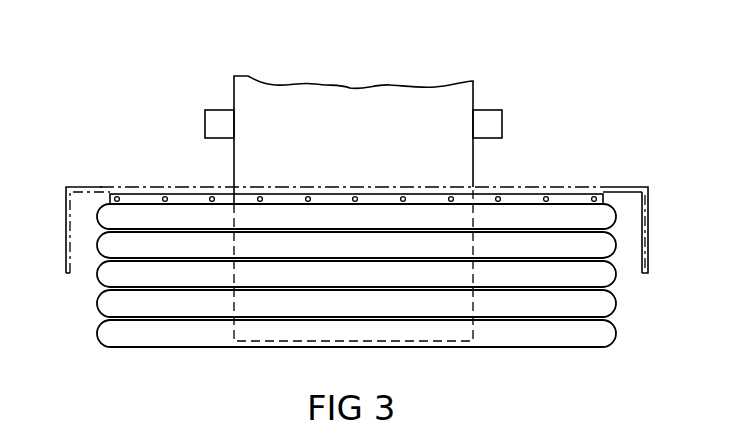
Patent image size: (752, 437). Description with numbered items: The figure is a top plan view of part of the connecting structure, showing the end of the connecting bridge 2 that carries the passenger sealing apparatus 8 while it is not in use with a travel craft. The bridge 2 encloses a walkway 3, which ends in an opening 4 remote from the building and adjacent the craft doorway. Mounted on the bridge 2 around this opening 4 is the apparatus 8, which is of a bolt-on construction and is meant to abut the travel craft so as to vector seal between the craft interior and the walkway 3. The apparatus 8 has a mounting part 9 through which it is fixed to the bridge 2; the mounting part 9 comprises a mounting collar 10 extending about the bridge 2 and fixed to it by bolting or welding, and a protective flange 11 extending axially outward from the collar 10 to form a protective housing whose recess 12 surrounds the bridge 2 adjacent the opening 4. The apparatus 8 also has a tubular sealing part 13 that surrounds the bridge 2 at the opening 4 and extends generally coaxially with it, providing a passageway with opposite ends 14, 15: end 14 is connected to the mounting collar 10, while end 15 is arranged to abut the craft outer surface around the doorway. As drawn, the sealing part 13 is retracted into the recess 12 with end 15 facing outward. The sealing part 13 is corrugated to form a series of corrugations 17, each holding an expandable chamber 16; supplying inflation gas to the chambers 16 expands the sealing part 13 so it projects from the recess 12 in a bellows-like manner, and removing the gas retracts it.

The connecting bridge 2 is at (234, 93).
The enclosed walkway 3 is at (345, 110).
The opening 4 is at (427, 344).
The apparatus 8 is at (657, 204).
The mounting part 9 is at (578, 187).
The mounting collar 10 is at (493, 184).
The protective flange 11 is at (648, 251).
The recess 12 is at (626, 202).
The sealing part 13 is at (371, 294).
The end 14 is at (135, 203).
The end 15 is at (160, 351).
The expandable chambers 16 is at (118, 337).
The corrugations 17 is at (612, 215).